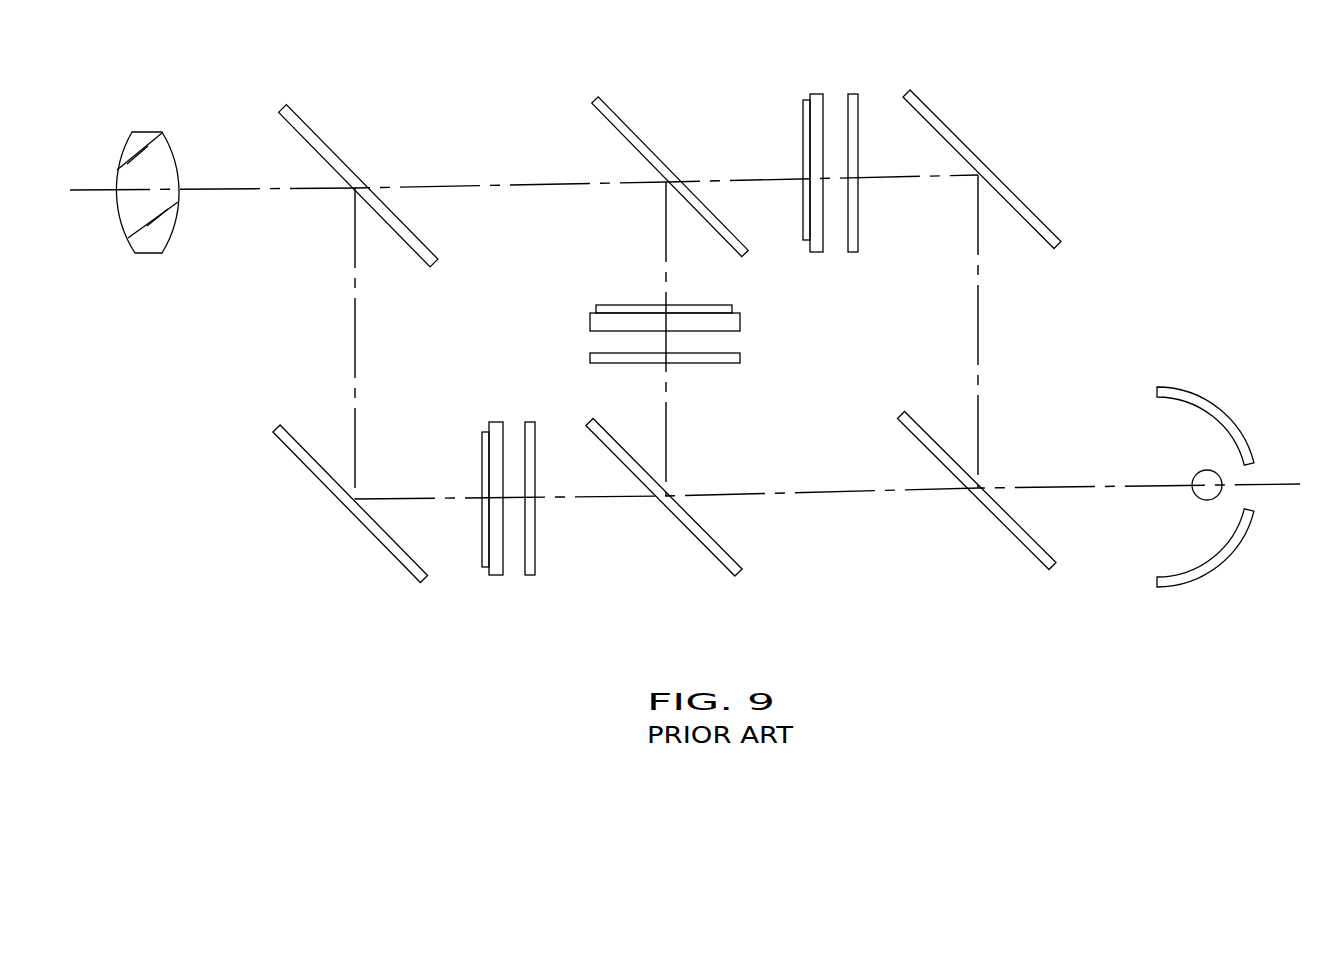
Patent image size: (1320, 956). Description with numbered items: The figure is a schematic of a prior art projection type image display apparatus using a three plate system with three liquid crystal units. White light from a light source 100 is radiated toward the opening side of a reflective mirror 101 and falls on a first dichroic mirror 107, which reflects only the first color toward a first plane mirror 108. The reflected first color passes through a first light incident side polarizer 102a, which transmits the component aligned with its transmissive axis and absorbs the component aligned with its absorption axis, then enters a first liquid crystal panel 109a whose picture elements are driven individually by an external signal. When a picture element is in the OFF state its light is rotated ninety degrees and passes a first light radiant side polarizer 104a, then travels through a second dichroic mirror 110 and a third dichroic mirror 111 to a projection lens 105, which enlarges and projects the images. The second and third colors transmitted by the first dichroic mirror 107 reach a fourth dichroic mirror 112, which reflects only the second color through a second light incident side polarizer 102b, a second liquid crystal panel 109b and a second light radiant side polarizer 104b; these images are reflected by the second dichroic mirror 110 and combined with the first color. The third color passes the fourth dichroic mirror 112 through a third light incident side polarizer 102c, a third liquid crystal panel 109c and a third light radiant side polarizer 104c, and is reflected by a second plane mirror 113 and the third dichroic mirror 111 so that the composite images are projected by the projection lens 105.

The light source 100 is at (1218, 473).
The reflective mirror 101 is at (1222, 561).
The first light incident side polarizer 102a is at (856, 94).
The second light incident side polarizer 102b is at (740, 360).
The third light incident side polarizer 102c is at (534, 574).
The first light radiant side polarizer 104a is at (804, 100).
The second light radiant side polarizer 104b is at (732, 305).
The third light radiant side polarizer 104c is at (485, 568).
The projection lens 105 is at (140, 131).
The first dichroic mirror 107 is at (1027, 556).
The first plane mirror 108 is at (1036, 212).
The first liquid crystal panel 109a is at (816, 94).
The second liquid crystal panel 109b is at (740, 323).
The third liquid crystal panel 109c is at (497, 576).
The second dichroic mirror 110 is at (627, 130).
The third dichroic mirror 111 is at (324, 140).
The fourth dichroic mirror 112 is at (721, 564).
The second plane mirror 113 is at (379, 542).